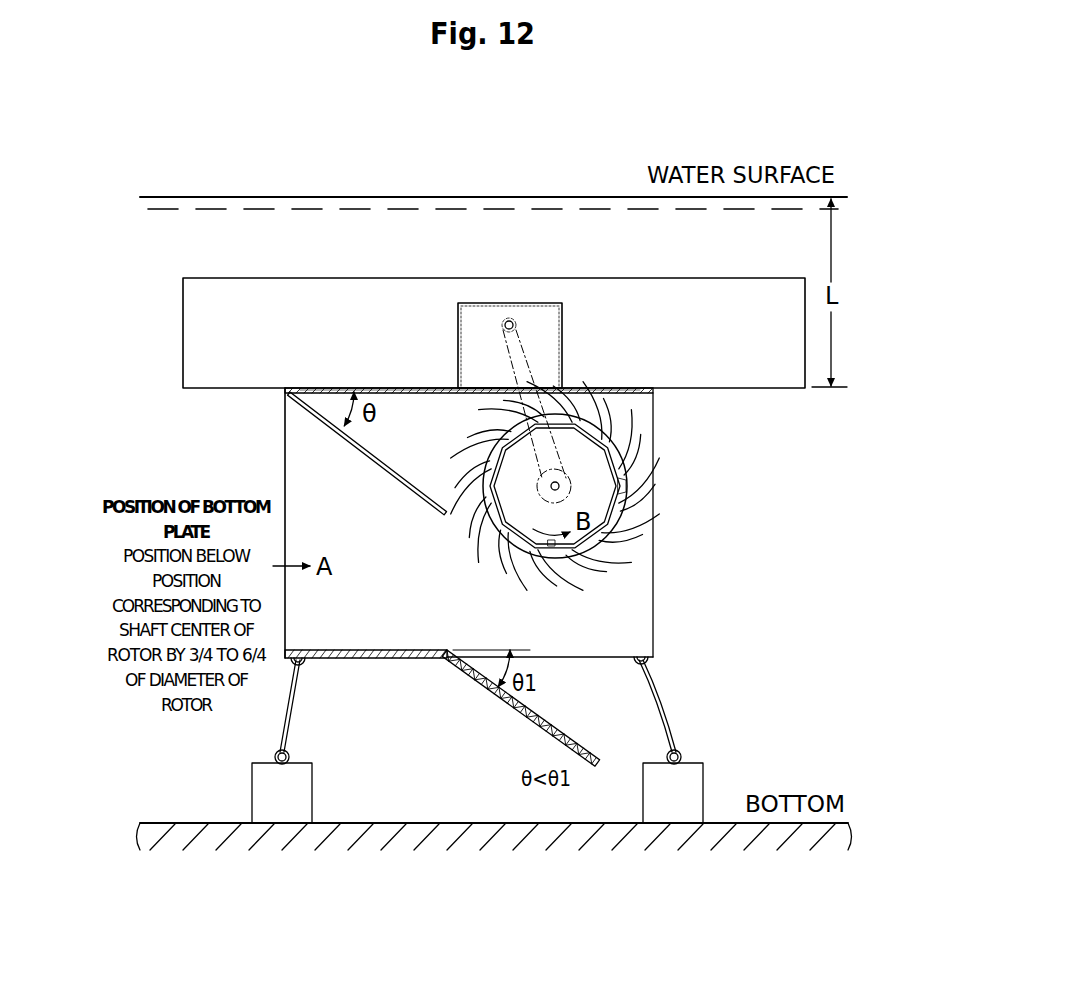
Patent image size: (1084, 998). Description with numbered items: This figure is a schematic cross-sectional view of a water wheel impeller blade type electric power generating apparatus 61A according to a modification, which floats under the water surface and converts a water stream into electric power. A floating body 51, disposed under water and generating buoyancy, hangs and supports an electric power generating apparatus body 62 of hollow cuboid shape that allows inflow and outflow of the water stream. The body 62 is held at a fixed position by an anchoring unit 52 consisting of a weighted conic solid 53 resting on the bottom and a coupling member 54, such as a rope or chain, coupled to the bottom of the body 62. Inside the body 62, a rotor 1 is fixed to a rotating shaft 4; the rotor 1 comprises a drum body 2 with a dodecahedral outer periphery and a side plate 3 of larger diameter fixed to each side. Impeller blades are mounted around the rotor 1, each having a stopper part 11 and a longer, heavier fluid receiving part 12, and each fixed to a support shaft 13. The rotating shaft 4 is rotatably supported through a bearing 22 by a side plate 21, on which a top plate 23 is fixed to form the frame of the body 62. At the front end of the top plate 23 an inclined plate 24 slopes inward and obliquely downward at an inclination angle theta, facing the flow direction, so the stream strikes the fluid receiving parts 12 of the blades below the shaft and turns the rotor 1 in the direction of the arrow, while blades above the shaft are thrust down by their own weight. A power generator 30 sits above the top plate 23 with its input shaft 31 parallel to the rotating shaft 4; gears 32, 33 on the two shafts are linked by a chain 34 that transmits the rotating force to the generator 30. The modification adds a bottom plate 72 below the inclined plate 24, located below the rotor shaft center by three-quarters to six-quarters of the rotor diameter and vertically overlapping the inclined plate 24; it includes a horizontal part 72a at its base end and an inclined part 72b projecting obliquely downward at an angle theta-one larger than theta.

The rotor 1 is at (604, 410).
The drum body 2 is at (568, 556).
The side plate 3 is at (607, 430).
The rotating shaft 4 is at (561, 487).
The stopper part 11 is at (495, 452).
The fluid receiving part 12 is at (508, 428).
The support shaft 13 is at (630, 488).
The side plate 21 is at (406, 386).
The bearing 22 is at (548, 484).
The top plate 23 is at (339, 387).
The inclined plate 24 is at (396, 472).
The power generator 30 is at (545, 305).
The input shaft 31 is at (507, 320).
The gear 32 is at (545, 499).
The gear 33 is at (505, 326).
The chain 34 is at (537, 368).
The floating body 51 is at (779, 390).
The anchoring unit 52 is at (502, 739).
The conic solid 53 is at (313, 778).
The coupling member 54 is at (294, 705).
The water wheel impeller blade type electric power generating apparatus 61A is at (238, 478).
The electric power generating apparatus body 62 is at (655, 566).
The bottom plate 72 is at (513, 716).
The horizontal part 72a is at (414, 660).
The inclined part 72b is at (560, 713).